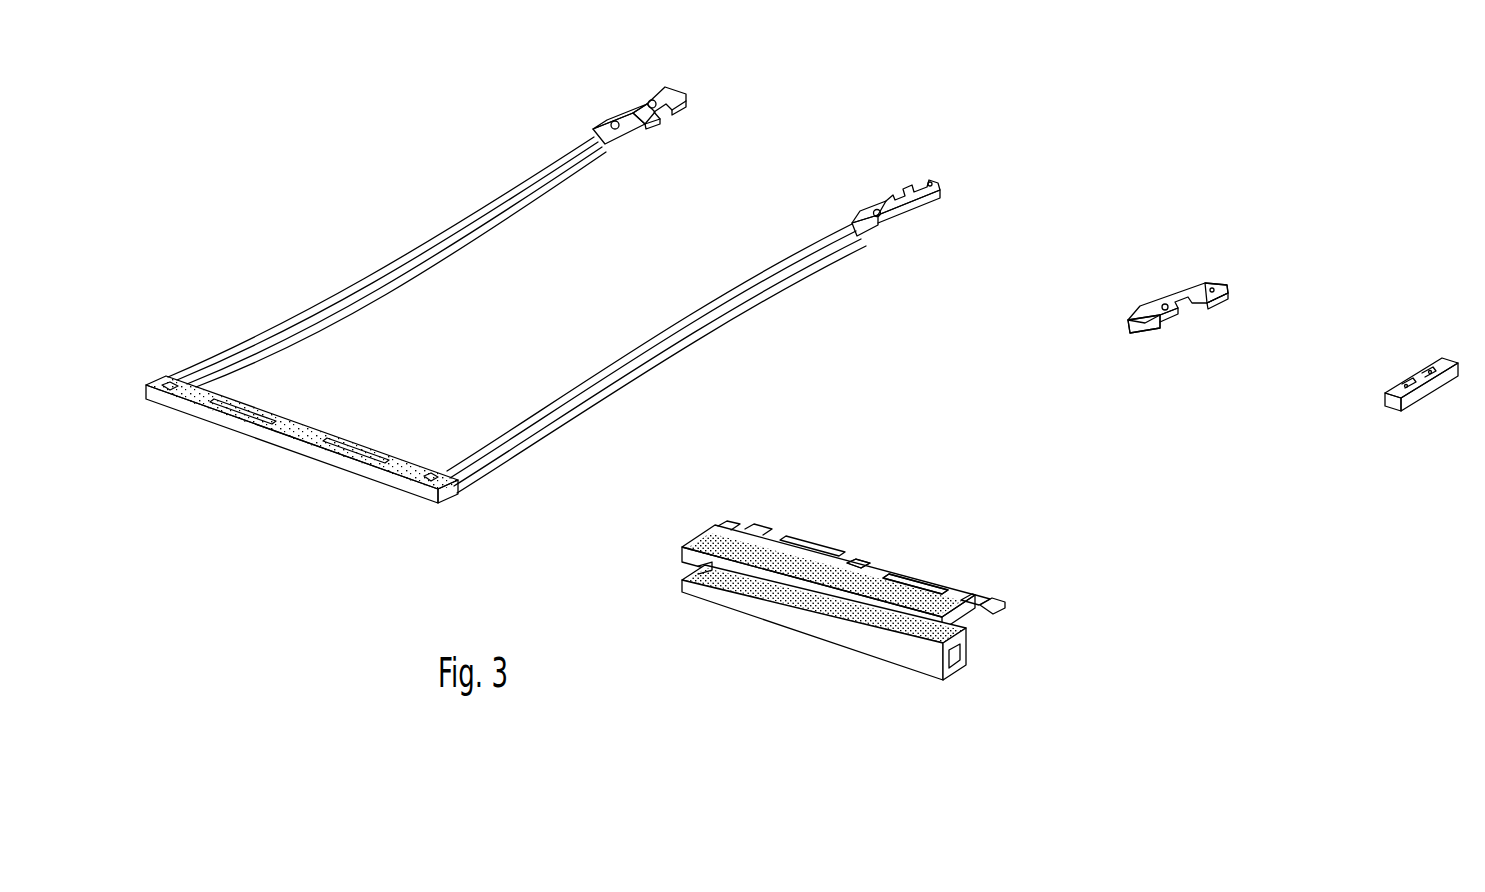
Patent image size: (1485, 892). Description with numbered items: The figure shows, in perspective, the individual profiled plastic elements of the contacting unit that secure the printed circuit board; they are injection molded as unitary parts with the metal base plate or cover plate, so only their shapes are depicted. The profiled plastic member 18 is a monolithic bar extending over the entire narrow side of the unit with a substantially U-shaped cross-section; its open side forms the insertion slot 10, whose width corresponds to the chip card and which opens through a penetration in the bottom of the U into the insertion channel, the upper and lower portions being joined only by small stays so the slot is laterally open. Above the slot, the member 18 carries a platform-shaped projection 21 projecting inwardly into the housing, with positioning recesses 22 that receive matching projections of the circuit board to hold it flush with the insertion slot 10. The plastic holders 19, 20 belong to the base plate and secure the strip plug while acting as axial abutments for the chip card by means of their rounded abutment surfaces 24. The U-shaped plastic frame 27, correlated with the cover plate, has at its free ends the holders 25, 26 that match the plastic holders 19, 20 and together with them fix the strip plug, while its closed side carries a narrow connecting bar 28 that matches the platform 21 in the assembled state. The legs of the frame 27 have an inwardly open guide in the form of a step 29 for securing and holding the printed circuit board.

The insertion slot 10 is at (790, 603).
The profiled plastic member 18 is at (937, 623).
The plastic holder 19 is at (1182, 287).
The plastic holder 20 is at (1448, 360).
The platform-shaped projection 21 is at (917, 580).
The positioning recess 22 is at (857, 562).
The rounded abutment surface 24 is at (1145, 325).
The holder 25 is at (631, 103).
The holder 26 is at (908, 213).
The U-shaped plastic frame 27 is at (487, 202).
The narrow connecting bar 28 is at (300, 433).
The step 29 is at (431, 255).